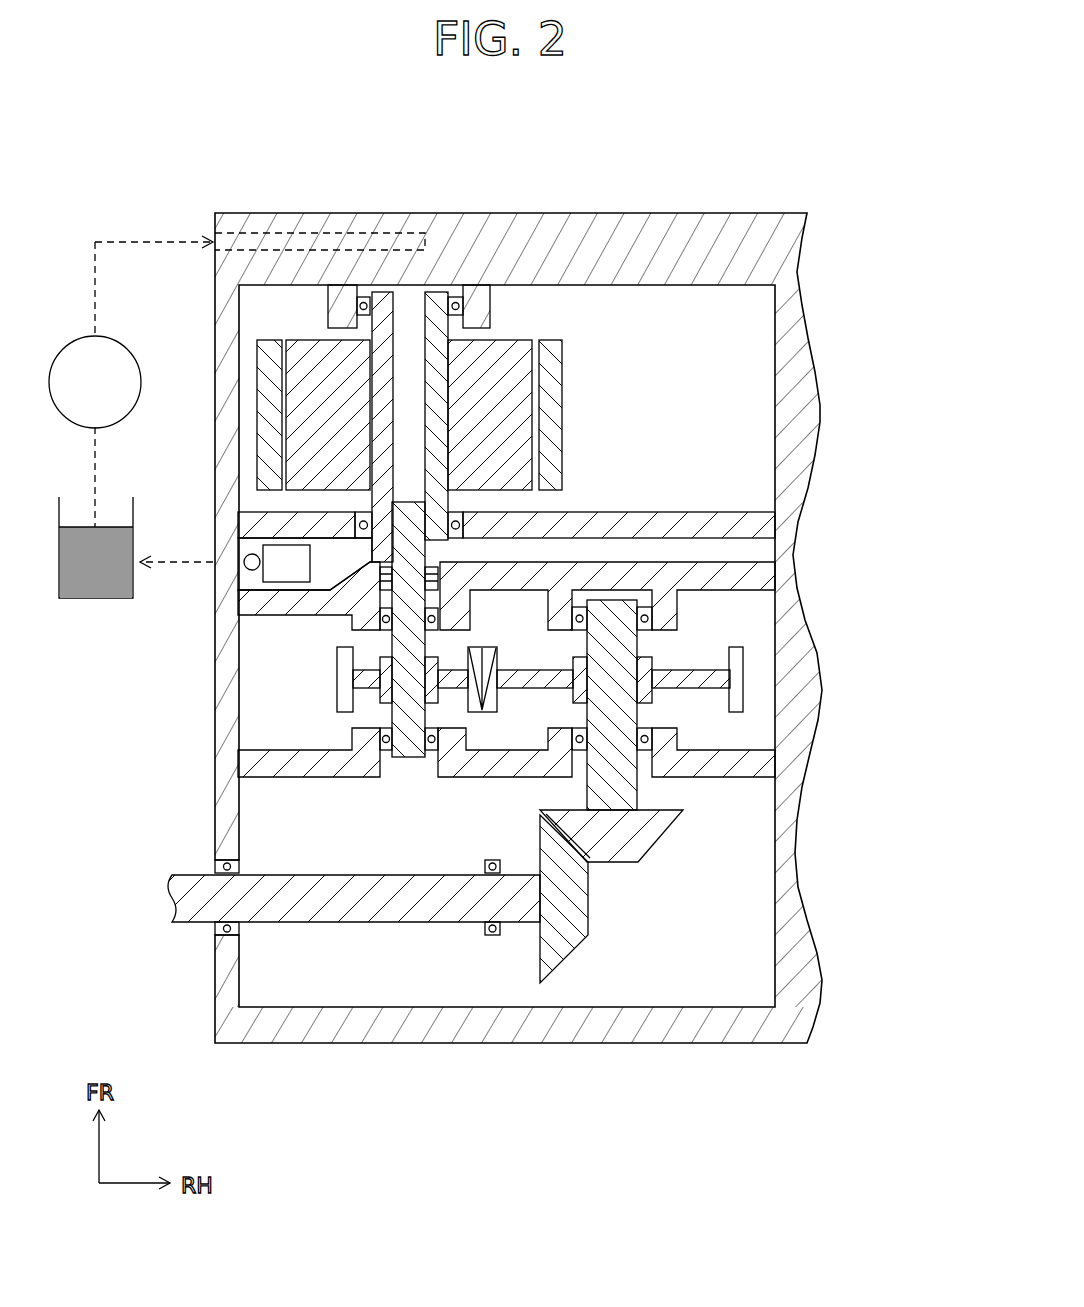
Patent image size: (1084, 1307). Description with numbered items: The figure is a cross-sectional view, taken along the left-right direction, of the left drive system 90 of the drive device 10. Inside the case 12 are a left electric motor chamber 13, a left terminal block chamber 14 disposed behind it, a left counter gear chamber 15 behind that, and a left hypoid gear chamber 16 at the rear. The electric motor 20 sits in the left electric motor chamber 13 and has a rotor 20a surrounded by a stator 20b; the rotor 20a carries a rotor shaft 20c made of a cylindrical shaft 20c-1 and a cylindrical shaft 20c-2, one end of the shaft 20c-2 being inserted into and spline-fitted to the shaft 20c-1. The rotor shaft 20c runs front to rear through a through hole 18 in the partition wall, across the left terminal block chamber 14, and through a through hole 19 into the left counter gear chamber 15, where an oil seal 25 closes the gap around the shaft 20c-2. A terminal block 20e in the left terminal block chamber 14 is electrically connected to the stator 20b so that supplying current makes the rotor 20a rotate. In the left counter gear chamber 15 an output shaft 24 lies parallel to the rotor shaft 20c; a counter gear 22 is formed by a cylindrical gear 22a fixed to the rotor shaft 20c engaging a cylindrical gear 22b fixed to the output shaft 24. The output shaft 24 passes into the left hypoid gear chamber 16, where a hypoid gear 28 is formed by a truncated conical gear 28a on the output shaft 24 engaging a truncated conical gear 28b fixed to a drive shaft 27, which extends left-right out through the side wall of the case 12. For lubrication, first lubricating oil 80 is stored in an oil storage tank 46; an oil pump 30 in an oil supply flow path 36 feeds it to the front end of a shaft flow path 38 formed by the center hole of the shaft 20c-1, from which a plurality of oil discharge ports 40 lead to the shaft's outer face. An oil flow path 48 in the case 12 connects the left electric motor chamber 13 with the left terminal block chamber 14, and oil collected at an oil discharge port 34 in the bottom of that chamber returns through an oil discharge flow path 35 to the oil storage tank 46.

The drive device 10 is at (170, 93).
The case 12 is at (752, 1030).
The left electric motor chamber 13 is at (708, 317).
The left terminal block chamber 14 is at (330, 512).
The left counter gear chamber 15 is at (260, 715).
The left hypoid gear chamber 16 is at (343, 980).
The through hole 18 is at (362, 505).
The through hole 19 is at (382, 640).
The electric motor 20 is at (460, 286).
The rotor 20a is at (500, 345).
The stator 20b is at (550, 367).
The rotor shaft 20c is at (557, 519).
The shaft 20c-1 is at (442, 430).
The shaft 20c-2 is at (415, 548).
The terminal block 20e is at (248, 545).
The counter gear 22 is at (693, 664).
The gear 22a is at (447, 668).
The gear 22b is at (735, 678).
The output shaft 24 is at (620, 723).
The oil seal 25 is at (382, 628).
The drive shaft 27 is at (425, 908).
The hypoid gear 28 is at (615, 998).
The gear 28a is at (630, 840).
The gear 28b is at (570, 940).
The oil pump 30 is at (90, 337).
The oil discharge port 34 is at (285, 547).
The oil discharge flow path 35 is at (170, 568).
The oil supply flow path 36 is at (128, 238).
The shaft flow path 38 is at (410, 360).
The oil discharge ports 40 is at (438, 300).
The oil storage tank 46 is at (60, 560).
The oil flow path 48 is at (345, 512).
The first lubricating oil 80 is at (89, 588).
The left drive system 90 is at (812, 180).